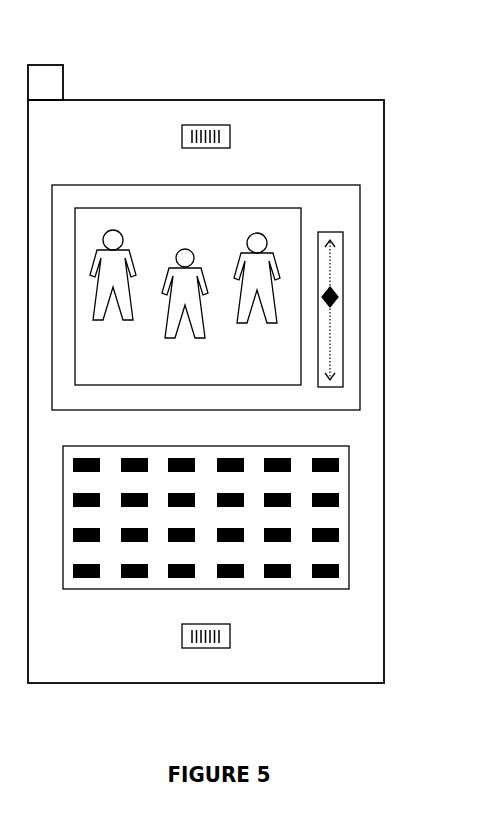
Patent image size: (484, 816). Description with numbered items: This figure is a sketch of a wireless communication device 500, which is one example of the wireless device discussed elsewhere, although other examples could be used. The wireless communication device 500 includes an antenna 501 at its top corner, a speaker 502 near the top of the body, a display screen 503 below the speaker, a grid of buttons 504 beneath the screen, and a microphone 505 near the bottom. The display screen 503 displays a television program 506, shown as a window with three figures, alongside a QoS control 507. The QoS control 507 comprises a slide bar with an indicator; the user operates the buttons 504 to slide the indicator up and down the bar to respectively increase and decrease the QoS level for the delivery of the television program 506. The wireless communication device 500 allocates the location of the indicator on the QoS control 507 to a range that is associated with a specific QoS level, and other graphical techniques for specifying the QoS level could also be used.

The wireless communication device 500 is at (392, 41).
The antenna 501 is at (63, 65).
The speaker 502 is at (230, 137).
The display screen 503 is at (98, 185).
The buttons 504 is at (120, 589).
The microphone 505 is at (230, 637).
The television program 506 is at (188, 296).
The QoS control 507 is at (343, 247).